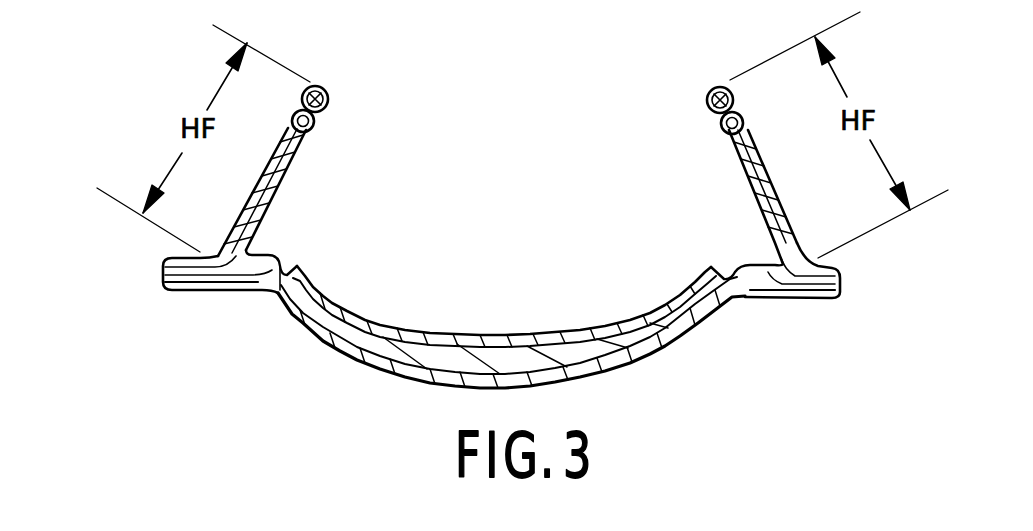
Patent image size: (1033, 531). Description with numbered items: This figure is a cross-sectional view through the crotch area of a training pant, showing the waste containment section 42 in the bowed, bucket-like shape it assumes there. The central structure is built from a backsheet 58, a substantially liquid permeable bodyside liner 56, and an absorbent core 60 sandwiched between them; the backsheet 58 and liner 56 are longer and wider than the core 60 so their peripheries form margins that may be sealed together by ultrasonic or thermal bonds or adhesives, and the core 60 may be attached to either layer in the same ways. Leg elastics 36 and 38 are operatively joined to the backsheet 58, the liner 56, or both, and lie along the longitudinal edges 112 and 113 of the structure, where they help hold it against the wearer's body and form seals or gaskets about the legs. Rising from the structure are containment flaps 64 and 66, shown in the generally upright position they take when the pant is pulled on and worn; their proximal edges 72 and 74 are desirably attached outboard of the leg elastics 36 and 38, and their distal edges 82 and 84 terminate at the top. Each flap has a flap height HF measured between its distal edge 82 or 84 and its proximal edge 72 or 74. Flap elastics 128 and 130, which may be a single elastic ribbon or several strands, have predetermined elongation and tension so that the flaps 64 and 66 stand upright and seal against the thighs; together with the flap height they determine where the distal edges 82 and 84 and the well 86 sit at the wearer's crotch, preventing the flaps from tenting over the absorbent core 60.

The leg elastic 36 is at (262, 256).
The leg elastic 38 is at (757, 264).
The waste containment section 42 is at (511, 319).
The bodyside liner 56 is at (408, 330).
The backsheet 58 is at (343, 358).
The absorbent core 60 is at (622, 348).
The containment flap 64 is at (299, 152).
The containment flap 66 is at (742, 164).
The proximal edge 72 is at (214, 290).
The proximal edge 74 is at (801, 297).
The distal edge 82 is at (328, 98).
The distal edge 84 is at (717, 88).
The well 86 is at (495, 157).
The longitudinal edge 112 is at (162, 268).
The longitudinal edge 113 is at (838, 281).
The flap elastic 128 is at (321, 86).
The flap elastic 130 is at (713, 95).